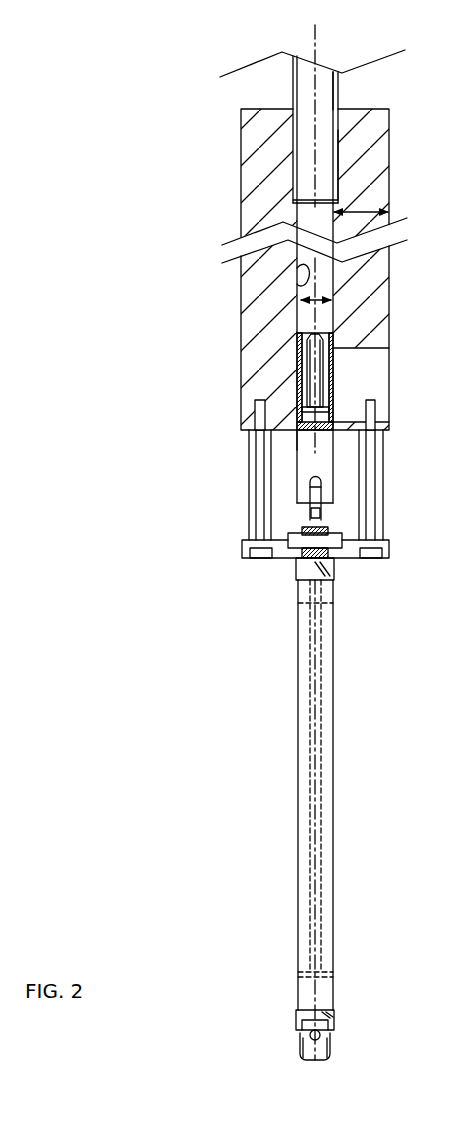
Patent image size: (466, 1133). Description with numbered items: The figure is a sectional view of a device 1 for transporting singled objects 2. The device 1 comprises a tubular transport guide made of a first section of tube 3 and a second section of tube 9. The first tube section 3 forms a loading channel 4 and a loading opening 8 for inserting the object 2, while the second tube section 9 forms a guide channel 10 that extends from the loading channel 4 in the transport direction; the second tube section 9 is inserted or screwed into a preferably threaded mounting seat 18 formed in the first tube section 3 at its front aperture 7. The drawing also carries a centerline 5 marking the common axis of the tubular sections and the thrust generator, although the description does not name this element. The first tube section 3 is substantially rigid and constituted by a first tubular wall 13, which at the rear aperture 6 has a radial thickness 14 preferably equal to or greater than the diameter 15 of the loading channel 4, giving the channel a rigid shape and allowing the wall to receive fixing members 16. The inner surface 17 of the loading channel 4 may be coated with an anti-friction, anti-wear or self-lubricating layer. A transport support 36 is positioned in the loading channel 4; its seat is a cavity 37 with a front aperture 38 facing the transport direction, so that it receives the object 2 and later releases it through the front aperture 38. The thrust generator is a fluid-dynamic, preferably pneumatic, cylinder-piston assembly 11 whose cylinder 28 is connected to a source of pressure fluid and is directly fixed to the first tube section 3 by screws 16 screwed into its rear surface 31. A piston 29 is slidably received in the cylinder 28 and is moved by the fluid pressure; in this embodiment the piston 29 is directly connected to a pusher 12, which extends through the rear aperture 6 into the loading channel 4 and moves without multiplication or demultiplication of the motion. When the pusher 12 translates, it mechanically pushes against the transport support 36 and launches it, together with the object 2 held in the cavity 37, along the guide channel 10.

The device 1 is at (215, 619).
The object 2 is at (243, 383).
The first section of tube 3 is at (303, 325).
The loading channel 4 is at (303, 290).
The spindle / longitudinal axis 5 is at (317, 50).
The rear aperture 6 is at (299, 442).
The front aperture 7 is at (307, 182).
The loading opening 8 is at (375, 383).
The second section of tube 9 is at (333, 98).
The guide channel 10 is at (307, 93).
The fluid-dynamic cylinder-piston assembly 11 is at (278, 755).
The pusher 12 is at (303, 465).
The first tubular wall 13 is at (370, 287).
The radial thickness 14 is at (367, 200).
The diameter 15 is at (336, 302).
The fixing members 16 is at (258, 512).
The inner surface 17 is at (300, 281).
The mounting seat 18 is at (342, 160).
The cylinder 28 is at (332, 893).
The piston 29 is at (320, 977).
The rear surface 31 is at (300, 430).
The transport support 36 is at (334, 368).
The cavity 37 is at (300, 362).
The front aperture 38 is at (303, 335).